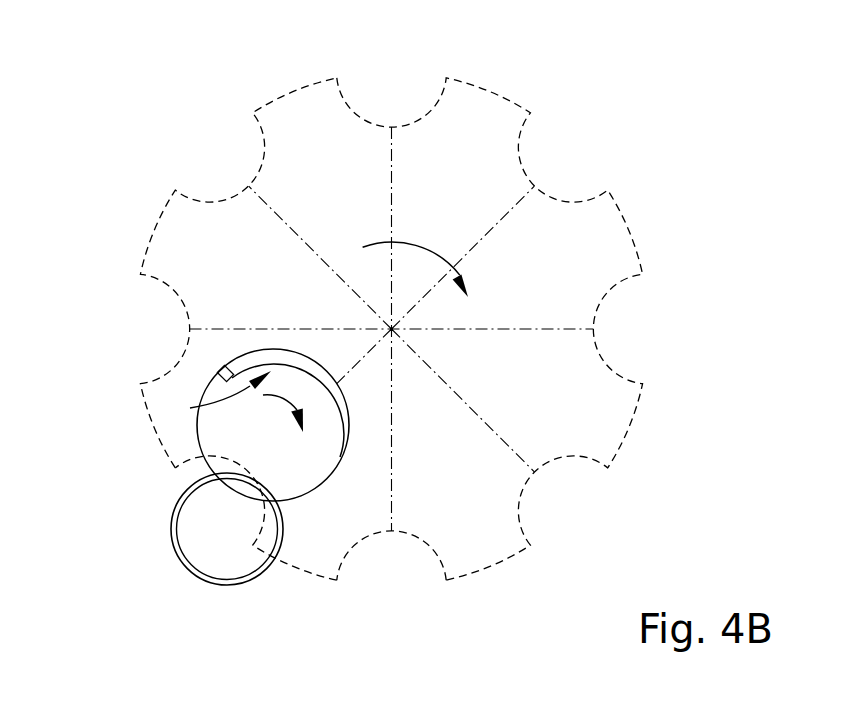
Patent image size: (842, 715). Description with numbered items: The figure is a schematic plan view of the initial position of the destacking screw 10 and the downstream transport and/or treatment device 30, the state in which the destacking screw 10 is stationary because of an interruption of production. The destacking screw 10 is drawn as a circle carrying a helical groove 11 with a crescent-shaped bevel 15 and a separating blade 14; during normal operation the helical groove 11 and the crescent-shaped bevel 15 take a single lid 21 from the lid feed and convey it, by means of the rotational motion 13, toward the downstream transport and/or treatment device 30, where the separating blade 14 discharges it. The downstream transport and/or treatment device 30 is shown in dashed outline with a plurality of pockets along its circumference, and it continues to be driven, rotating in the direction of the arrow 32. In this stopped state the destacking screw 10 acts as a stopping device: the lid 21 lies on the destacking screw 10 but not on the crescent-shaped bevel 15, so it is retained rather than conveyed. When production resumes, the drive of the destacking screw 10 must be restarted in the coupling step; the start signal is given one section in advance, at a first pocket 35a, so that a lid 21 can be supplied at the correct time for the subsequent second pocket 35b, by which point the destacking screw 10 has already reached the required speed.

The destacking screw 10 is at (302, 477).
The helical groove 11 is at (190, 408).
The rotational motion 13 is at (305, 403).
The separating blade 14 is at (218, 378).
The crescent-shaped bevel 15 is at (258, 358).
The lid 21 is at (213, 557).
The downstream transport and/or treatment device 30 is at (482, 113).
The arrow 32 is at (458, 272).
The first pocket 35a is at (198, 472).
The second pocket 35b is at (398, 563).